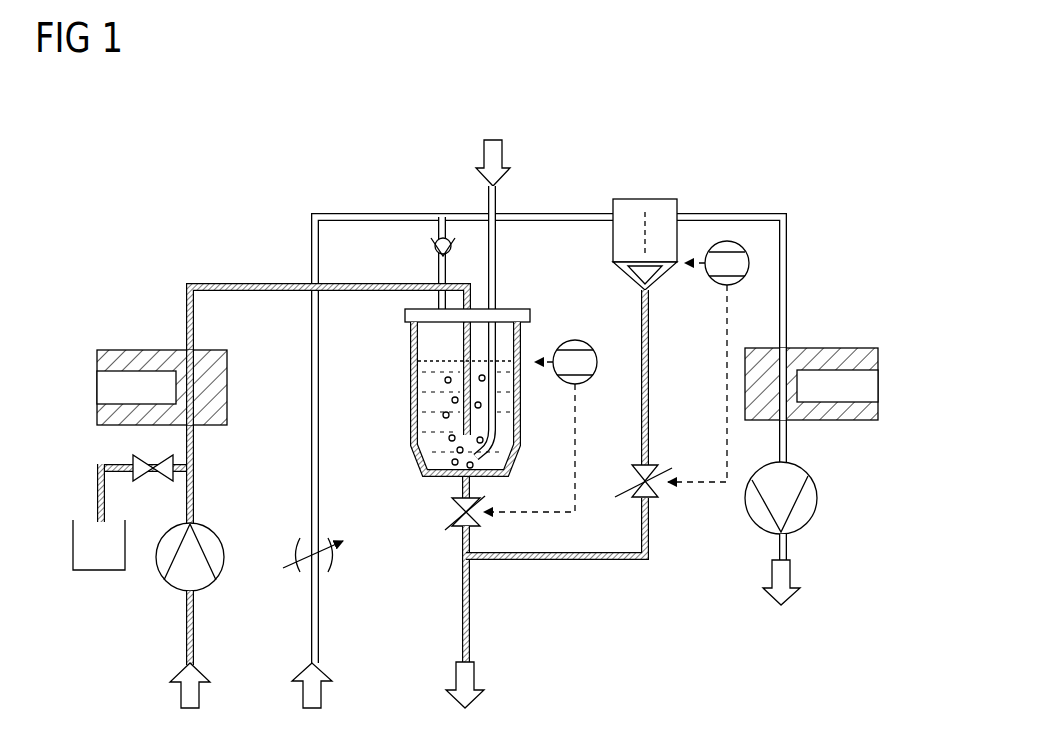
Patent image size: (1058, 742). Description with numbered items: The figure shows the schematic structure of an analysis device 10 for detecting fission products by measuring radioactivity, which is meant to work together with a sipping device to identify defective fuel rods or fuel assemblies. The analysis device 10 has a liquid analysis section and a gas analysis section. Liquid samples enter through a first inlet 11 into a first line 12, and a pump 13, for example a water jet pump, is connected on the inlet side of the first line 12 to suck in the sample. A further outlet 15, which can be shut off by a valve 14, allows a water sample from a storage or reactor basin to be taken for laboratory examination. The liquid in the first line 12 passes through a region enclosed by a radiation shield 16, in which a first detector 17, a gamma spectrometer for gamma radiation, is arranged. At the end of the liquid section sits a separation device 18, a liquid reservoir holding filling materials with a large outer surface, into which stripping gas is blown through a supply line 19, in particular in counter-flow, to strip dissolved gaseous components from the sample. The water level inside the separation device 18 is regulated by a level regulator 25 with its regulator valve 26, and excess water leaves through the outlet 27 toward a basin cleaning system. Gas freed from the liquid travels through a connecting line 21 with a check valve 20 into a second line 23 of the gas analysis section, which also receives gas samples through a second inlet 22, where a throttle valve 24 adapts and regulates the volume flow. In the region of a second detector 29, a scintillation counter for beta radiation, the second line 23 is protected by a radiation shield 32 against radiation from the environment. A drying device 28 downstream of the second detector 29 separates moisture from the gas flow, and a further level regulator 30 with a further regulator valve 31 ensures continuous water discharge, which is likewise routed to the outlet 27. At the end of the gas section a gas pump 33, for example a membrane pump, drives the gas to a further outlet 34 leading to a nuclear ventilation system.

The analysis device 10 is at (790, 145).
The first inlet 11 is at (198, 693).
The first line 12 is at (262, 292).
The pump 13 is at (222, 572).
The valve 14 is at (148, 480).
The further outlet 15 is at (80, 502).
The radiation shield 16 is at (220, 385).
The first detector 17 is at (100, 385).
The separation device 18 is at (412, 447).
The supply line 19 is at (497, 248).
The check valve 20 is at (440, 218).
The connecting line 21 is at (438, 258).
The second inlet 22 is at (318, 693).
The second line 23 is at (352, 213).
The throttle valve 24 is at (338, 572).
The level regulator 25 is at (585, 388).
The regulator valve 26 is at (444, 512).
The outlet 27 is at (468, 675).
The drying device 28 is at (645, 199).
The second detector 29 is at (870, 385).
The further level regulator 30 is at (715, 284).
The further regulator valve 31 is at (660, 445).
The radiation shield 32 is at (757, 348).
The gas pump 33 is at (818, 498).
The further outlet 34 is at (785, 577).